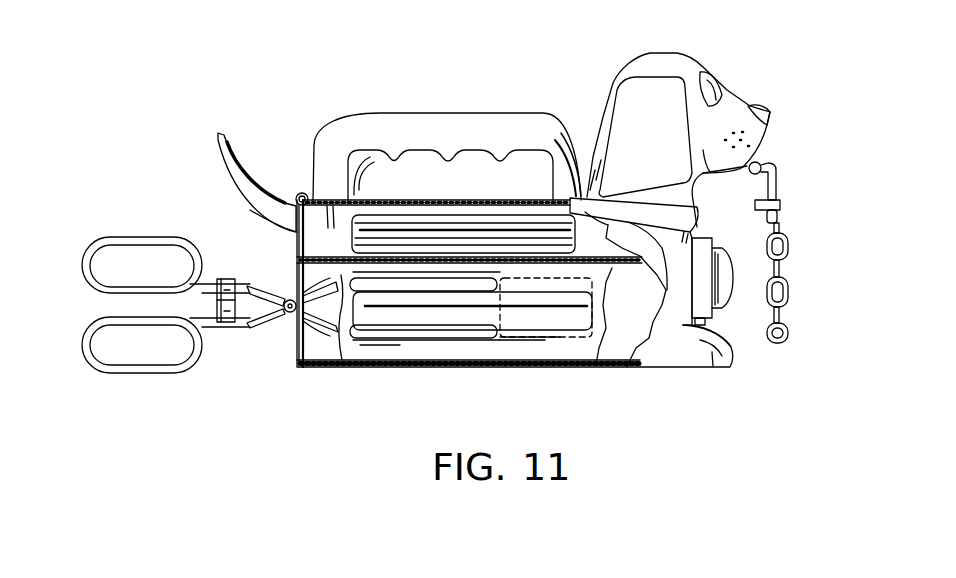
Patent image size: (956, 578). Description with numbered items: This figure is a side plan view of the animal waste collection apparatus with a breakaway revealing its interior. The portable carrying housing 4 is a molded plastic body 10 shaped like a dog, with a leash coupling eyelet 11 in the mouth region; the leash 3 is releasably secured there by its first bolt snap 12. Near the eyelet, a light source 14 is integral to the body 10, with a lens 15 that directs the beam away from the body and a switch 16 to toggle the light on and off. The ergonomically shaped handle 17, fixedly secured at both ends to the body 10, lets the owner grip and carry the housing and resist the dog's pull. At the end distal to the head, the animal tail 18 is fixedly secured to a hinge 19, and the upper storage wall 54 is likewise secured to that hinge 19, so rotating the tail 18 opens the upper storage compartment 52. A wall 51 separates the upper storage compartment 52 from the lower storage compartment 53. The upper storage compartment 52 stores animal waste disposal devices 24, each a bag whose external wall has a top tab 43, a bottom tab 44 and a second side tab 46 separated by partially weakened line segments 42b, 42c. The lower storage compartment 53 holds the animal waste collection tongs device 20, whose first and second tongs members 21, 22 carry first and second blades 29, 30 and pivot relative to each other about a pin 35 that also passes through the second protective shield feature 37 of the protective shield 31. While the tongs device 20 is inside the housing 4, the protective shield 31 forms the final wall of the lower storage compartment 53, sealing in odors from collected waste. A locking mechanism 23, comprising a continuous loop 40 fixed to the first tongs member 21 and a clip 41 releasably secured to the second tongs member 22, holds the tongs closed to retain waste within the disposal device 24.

The leash 3 is at (795, 244).
The portable carrying housing 4 is at (709, 49).
The body 10 is at (675, 282).
The leash coupling eyelet 11 is at (768, 158).
The first bolt snap 12 is at (780, 180).
The light source 14 is at (699, 224).
The lens 15 is at (733, 275).
The switch 16 is at (700, 323).
The handle 17 is at (386, 130).
The animal tail 18 is at (243, 158).
The hinge 19 is at (299, 195).
The animal waste collection tongs device 20 is at (145, 315).
The first tongs member 21 is at (115, 238).
The second tongs member 22 is at (105, 372).
The locking mechanism 23 is at (207, 306).
The animal waste disposal device 24 is at (558, 152).
The first blade 29 is at (512, 345).
The second blade 30 is at (462, 330).
The protective shield 31 is at (296, 262).
The pin 35 is at (268, 322).
The second protective shield feature 37 is at (287, 327).
The continuous loop 40 is at (225, 278).
The clip 41 is at (227, 322).
The line segment 42b is at (598, 325).
The line segment 42c is at (557, 340).
The top tab 43 is at (313, 347).
The bottom tab 44 is at (367, 340).
The second side tab 46 is at (430, 292).
The wall 51 is at (610, 265).
The upper storage compartment 52 is at (330, 227).
The lower storage compartment 53 is at (304, 362).
The upper storage wall 54 is at (257, 213).